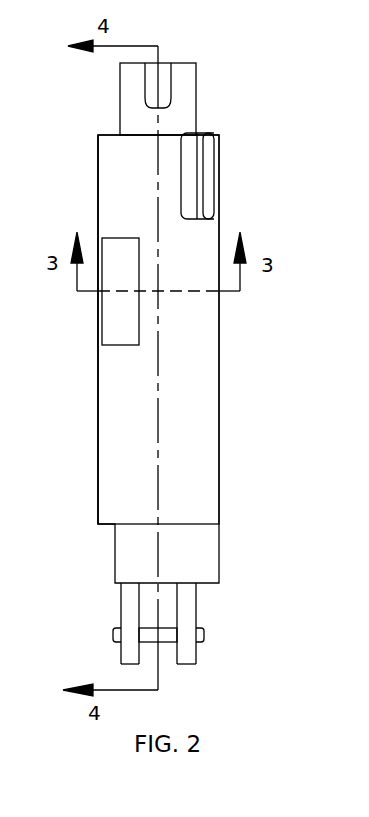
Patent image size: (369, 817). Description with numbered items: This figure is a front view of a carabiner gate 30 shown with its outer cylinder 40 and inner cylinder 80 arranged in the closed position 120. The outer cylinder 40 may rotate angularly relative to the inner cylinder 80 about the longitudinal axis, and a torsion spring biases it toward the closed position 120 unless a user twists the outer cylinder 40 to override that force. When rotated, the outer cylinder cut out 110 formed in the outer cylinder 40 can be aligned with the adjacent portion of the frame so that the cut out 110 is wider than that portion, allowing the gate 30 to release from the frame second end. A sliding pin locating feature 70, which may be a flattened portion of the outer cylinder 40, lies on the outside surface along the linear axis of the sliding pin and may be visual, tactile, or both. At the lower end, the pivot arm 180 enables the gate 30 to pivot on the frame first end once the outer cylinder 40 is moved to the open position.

The gate 30 is at (228, 430).
The outer cylinder 40 is at (198, 352).
The sliding pin locating feature 70 is at (118, 326).
The inner cylinder 80 is at (130, 105).
The outer cylinder cut out 110 is at (207, 182).
The closed position 120 is at (70, 412).
The pivot arm 180 is at (167, 637).